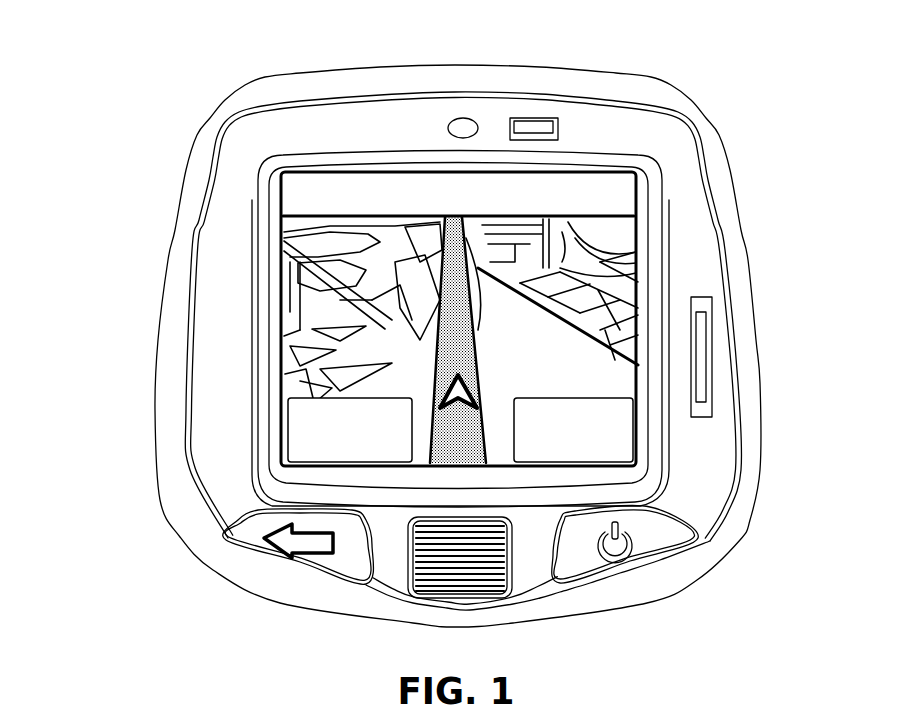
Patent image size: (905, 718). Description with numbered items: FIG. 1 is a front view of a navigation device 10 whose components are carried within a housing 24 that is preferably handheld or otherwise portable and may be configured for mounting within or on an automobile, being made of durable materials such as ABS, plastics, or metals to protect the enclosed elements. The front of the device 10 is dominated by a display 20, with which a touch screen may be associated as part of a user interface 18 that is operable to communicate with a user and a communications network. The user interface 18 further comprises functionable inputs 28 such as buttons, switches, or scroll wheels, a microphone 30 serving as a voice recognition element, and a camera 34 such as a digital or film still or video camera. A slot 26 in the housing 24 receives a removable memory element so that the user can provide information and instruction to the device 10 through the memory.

The device 10 is at (182, 104).
The user interface 18 is at (222, 601).
The display 20 is at (313, 357).
The housing 24 is at (678, 167).
The slot 26 is at (706, 406).
The functionable inputs 28 is at (570, 560).
The microphone 30 is at (468, 124).
The camera 34 is at (556, 128).